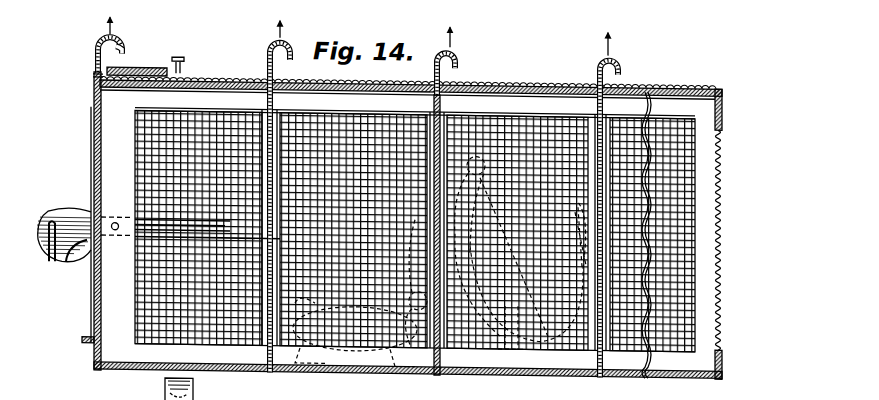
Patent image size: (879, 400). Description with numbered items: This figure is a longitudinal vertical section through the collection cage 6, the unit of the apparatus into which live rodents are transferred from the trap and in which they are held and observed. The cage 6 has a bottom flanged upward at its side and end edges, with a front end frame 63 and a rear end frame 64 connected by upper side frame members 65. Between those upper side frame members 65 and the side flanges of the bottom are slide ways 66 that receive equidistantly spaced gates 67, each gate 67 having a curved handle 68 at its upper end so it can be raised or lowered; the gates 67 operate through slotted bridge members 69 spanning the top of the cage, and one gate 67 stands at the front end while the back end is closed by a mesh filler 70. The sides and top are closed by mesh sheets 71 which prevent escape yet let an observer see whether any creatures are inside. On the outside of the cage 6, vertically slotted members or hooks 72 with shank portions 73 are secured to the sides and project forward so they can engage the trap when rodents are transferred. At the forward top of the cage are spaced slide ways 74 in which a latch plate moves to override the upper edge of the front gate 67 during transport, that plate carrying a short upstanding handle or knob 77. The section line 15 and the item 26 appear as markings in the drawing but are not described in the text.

The collection cage 6 is at (528, 78).
The partition rod / section line 15 is at (274, 35).
The hinge 26 is at (97, 74).
The front end frame 63 is at (94, 95).
The rear end frame 64 is at (724, 110).
The upper side frame members 65 is at (478, 100).
The slide ways 66 is at (427, 125).
The gates 67 is at (92, 130).
The curved handle 68 is at (104, 41).
The slotted bridge members 69 is at (418, 88).
The mesh filler 70 is at (721, 210).
The mesh sheets 71 is at (672, 258).
The hooks 72 is at (62, 217).
The shank portions 73 is at (85, 255).
The slide ways 74 is at (153, 68).
The handle or knob 77 is at (123, 47).